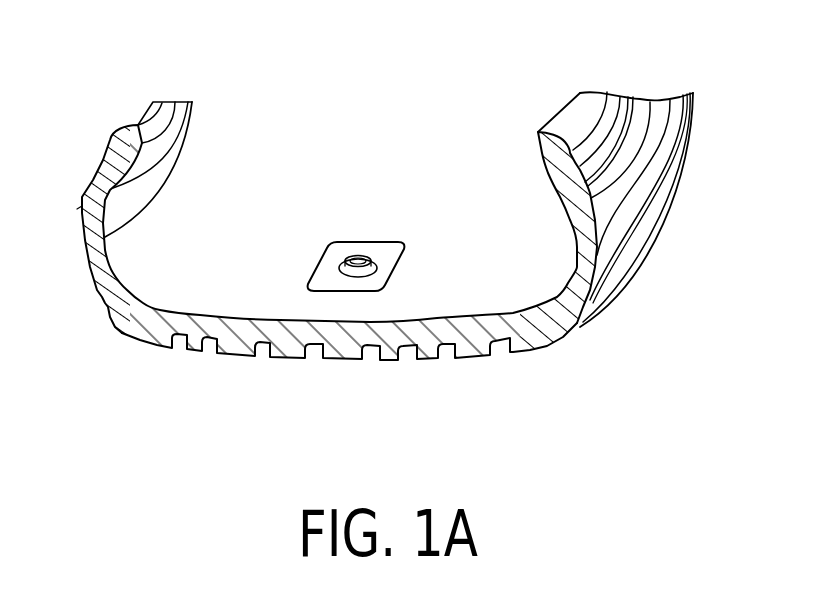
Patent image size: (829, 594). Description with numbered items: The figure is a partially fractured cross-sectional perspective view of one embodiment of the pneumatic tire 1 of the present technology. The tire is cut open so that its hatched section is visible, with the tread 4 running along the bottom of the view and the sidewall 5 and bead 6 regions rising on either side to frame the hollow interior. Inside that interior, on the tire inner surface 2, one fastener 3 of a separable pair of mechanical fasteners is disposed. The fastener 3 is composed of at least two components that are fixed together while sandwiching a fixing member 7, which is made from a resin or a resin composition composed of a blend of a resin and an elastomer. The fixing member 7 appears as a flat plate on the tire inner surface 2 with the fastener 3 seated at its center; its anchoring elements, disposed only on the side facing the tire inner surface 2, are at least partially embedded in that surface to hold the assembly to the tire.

The pneumatic tire 1 is at (158, 345).
The tire inner surface 2 is at (231, 153).
The fastener 3 is at (340, 262).
The tread 4 is at (420, 360).
The sidewall 5 is at (598, 253).
The bead 6 is at (573, 157).
The fixing member 7 is at (385, 248).